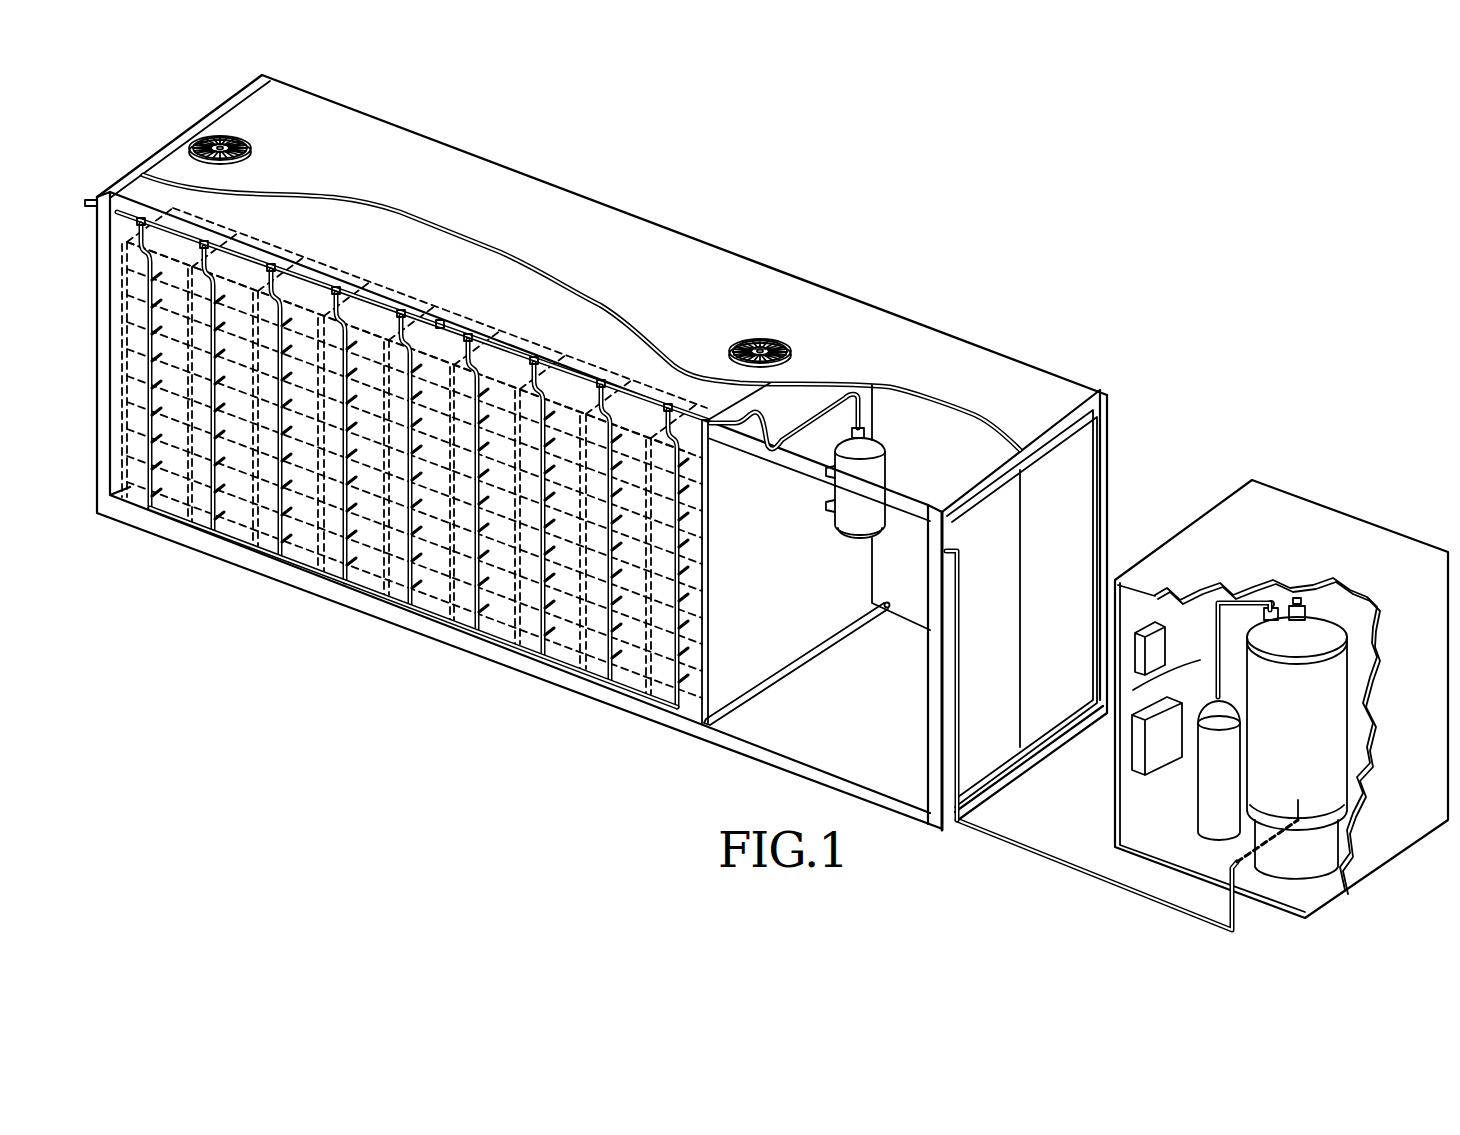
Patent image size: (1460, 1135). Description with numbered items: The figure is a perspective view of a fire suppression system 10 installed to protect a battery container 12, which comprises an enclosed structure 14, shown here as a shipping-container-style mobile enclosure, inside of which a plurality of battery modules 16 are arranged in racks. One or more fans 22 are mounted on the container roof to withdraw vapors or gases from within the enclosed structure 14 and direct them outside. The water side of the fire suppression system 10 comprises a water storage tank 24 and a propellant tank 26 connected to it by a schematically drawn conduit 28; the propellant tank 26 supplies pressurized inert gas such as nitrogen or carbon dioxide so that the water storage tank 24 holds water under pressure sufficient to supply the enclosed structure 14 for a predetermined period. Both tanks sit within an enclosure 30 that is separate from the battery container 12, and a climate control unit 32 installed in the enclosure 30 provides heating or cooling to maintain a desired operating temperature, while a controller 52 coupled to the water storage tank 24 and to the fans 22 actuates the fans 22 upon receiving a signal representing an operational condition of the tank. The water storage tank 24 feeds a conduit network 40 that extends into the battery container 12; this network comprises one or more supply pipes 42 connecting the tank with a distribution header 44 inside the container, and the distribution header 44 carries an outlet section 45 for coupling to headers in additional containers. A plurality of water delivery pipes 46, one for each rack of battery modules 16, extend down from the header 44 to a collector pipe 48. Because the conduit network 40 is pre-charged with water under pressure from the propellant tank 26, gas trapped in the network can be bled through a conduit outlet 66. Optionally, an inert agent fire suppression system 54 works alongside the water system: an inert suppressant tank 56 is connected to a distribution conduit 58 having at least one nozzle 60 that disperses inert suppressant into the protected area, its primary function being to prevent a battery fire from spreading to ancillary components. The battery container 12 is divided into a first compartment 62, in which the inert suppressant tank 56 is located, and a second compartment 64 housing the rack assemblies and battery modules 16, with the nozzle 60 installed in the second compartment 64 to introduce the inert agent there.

The fire suppression system 10 is at (1364, 432).
The battery container 12 is at (762, 236).
The enclosed structure 14 is at (660, 257).
The battery modules 16 is at (632, 667).
The fans 22 is at (240, 142).
The water storage tank 24 is at (1333, 740).
The propellant tank 26 is at (1203, 778).
The conduit 28 is at (1218, 665).
The enclosure 30 is at (1398, 834).
The climate control unit 32 is at (1138, 750).
The conduit network 40 is at (960, 584).
The supply pipes 42 is at (1107, 882).
The distribution header 44 is at (520, 367).
The outlet section 45 is at (93, 197).
The water delivery pipes 46 is at (606, 607).
The collector pipe 48 is at (433, 618).
The controller 52 is at (1140, 650).
The inert agent fire suppression system 54 is at (840, 540).
The inert suppressant tank 56 is at (837, 510).
The distribution conduit 58 is at (774, 440).
The nozzle 60 is at (440, 322).
The first compartment 62 is at (882, 727).
The second compartment 64 is at (366, 246).
The conduit outlet 66 is at (883, 617).